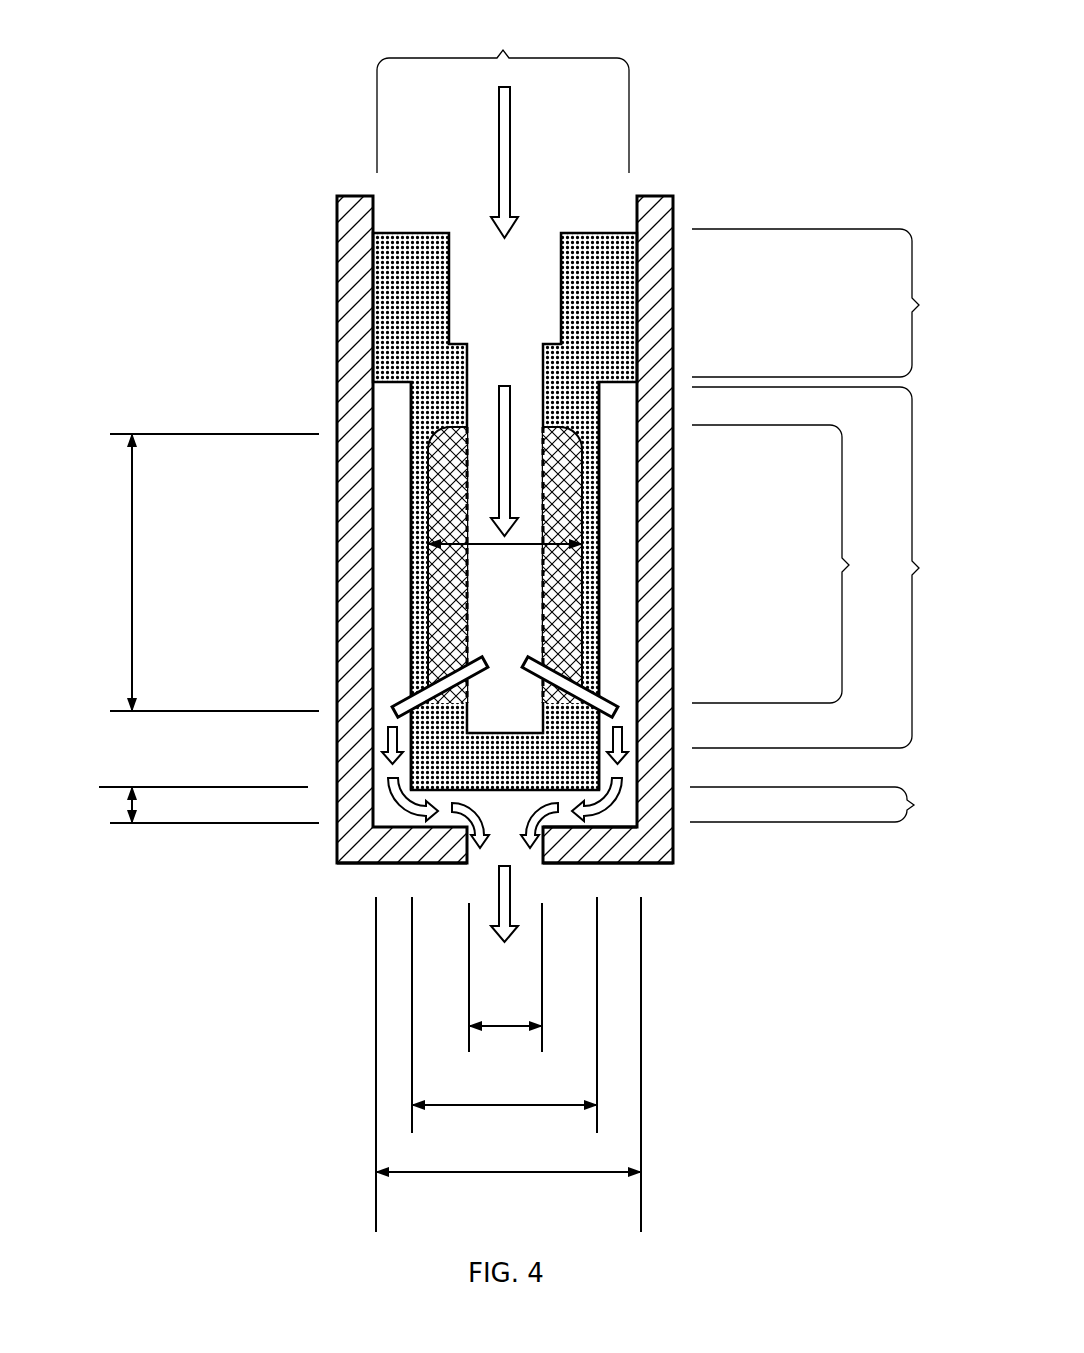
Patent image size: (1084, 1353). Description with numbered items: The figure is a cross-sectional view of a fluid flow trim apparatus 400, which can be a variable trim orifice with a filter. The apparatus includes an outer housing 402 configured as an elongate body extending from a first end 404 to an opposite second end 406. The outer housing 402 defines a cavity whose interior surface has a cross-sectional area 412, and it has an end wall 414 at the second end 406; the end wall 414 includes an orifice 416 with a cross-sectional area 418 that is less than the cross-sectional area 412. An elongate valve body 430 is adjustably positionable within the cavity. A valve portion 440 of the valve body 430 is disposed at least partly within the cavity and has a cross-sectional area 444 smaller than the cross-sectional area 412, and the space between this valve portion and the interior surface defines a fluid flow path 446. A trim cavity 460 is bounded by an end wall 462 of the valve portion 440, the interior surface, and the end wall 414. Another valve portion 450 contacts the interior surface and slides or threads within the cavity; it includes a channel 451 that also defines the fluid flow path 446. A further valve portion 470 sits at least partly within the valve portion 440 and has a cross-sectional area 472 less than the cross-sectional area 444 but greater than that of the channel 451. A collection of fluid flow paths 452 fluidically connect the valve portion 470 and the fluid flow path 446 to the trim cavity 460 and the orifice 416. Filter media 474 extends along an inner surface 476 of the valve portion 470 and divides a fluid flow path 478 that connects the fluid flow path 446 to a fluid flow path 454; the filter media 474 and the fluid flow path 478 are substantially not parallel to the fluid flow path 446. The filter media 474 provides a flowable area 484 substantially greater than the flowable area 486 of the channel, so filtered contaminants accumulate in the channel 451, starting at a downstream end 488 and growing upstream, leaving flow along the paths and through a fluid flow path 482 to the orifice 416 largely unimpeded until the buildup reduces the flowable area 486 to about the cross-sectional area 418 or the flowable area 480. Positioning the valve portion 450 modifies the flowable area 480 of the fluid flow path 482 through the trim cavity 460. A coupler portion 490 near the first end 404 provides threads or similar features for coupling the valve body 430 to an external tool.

The fluid flow trim apparatus 400 is at (130, 152).
The outer housing 402 is at (337, 197).
The first end 404 is at (652, 196).
The second end 406 is at (656, 866).
The cross-sectional area 412 is at (500, 1175).
The end wall 414 is at (608, 830).
The orifice 416 is at (478, 871).
The cross-sectional area 418 is at (500, 1030).
The valve body 430 is at (577, 218).
The valve portion 440 is at (827, 567).
The cross-sectional area 444 is at (500, 1108).
The fluid flow path 446 is at (498, 422).
The valve portion 450 is at (667, 509).
The channel 451 is at (506, 362).
The fluid flow paths 452 is at (403, 690).
The fluid flow path 454 is at (410, 790).
The trim cavity 460 is at (826, 804).
The end wall 462 is at (455, 795).
The valve portion 470 is at (679, 564).
The cross-sectional area 472 is at (527, 547).
The filter media 474 is at (447, 527).
The inner surface 476 is at (430, 578).
The fluid flow path 478 is at (397, 710).
The flowable area 480 is at (132, 806).
The fluid flow path 482 is at (483, 871).
The flowable area 484 is at (132, 470).
The flowable area 486 is at (410, 695).
The downstream end 488 is at (400, 728).
The coupler portion 490 is at (480, 239).